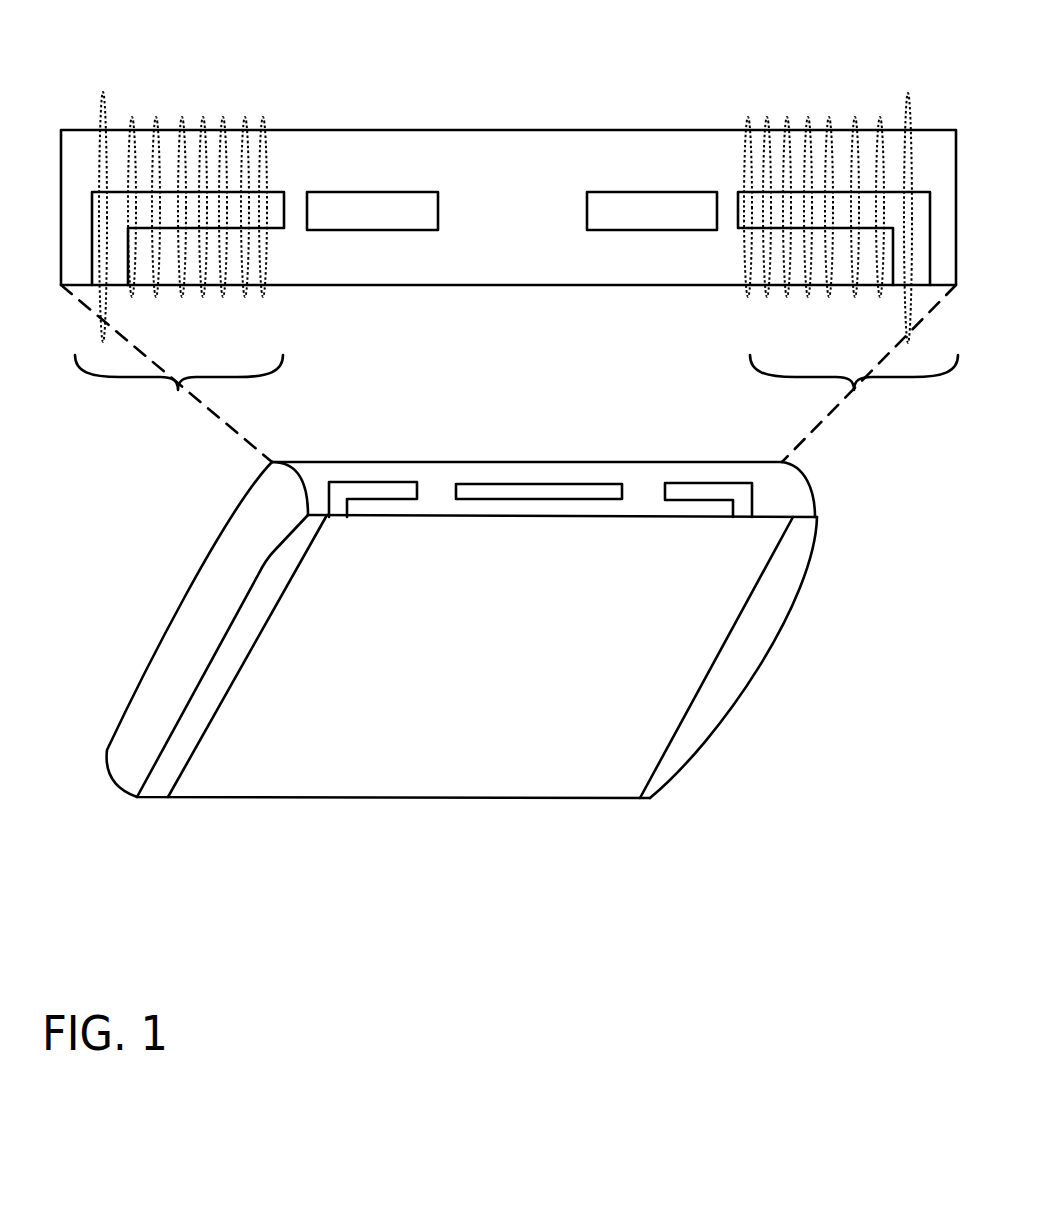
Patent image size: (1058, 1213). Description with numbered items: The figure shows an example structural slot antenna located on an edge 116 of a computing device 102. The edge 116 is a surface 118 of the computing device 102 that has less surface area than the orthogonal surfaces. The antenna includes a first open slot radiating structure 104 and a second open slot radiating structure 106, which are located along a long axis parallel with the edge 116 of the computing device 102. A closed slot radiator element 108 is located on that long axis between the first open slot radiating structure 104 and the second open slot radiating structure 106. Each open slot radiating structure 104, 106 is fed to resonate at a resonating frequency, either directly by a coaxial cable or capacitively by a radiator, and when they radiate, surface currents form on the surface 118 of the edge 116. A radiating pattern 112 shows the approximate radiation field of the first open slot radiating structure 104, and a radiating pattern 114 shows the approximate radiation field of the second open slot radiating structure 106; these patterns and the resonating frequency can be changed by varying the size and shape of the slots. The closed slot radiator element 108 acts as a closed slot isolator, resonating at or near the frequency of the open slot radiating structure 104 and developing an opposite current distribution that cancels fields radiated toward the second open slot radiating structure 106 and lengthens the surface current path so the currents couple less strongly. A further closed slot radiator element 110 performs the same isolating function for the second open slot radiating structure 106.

The computing device 102 is at (197, 558).
The first open slot radiating structure 104 is at (168, 190).
The second open slot radiating structure 106 is at (843, 190).
The closed slot radiator element 108 is at (375, 190).
The closed slot radiator element 110 is at (652, 192).
The radiating pattern 112 is at (172, 373).
The radiating pattern 114 is at (854, 373).
The edge 116 is at (422, 130).
The surface 118 is at (558, 178).